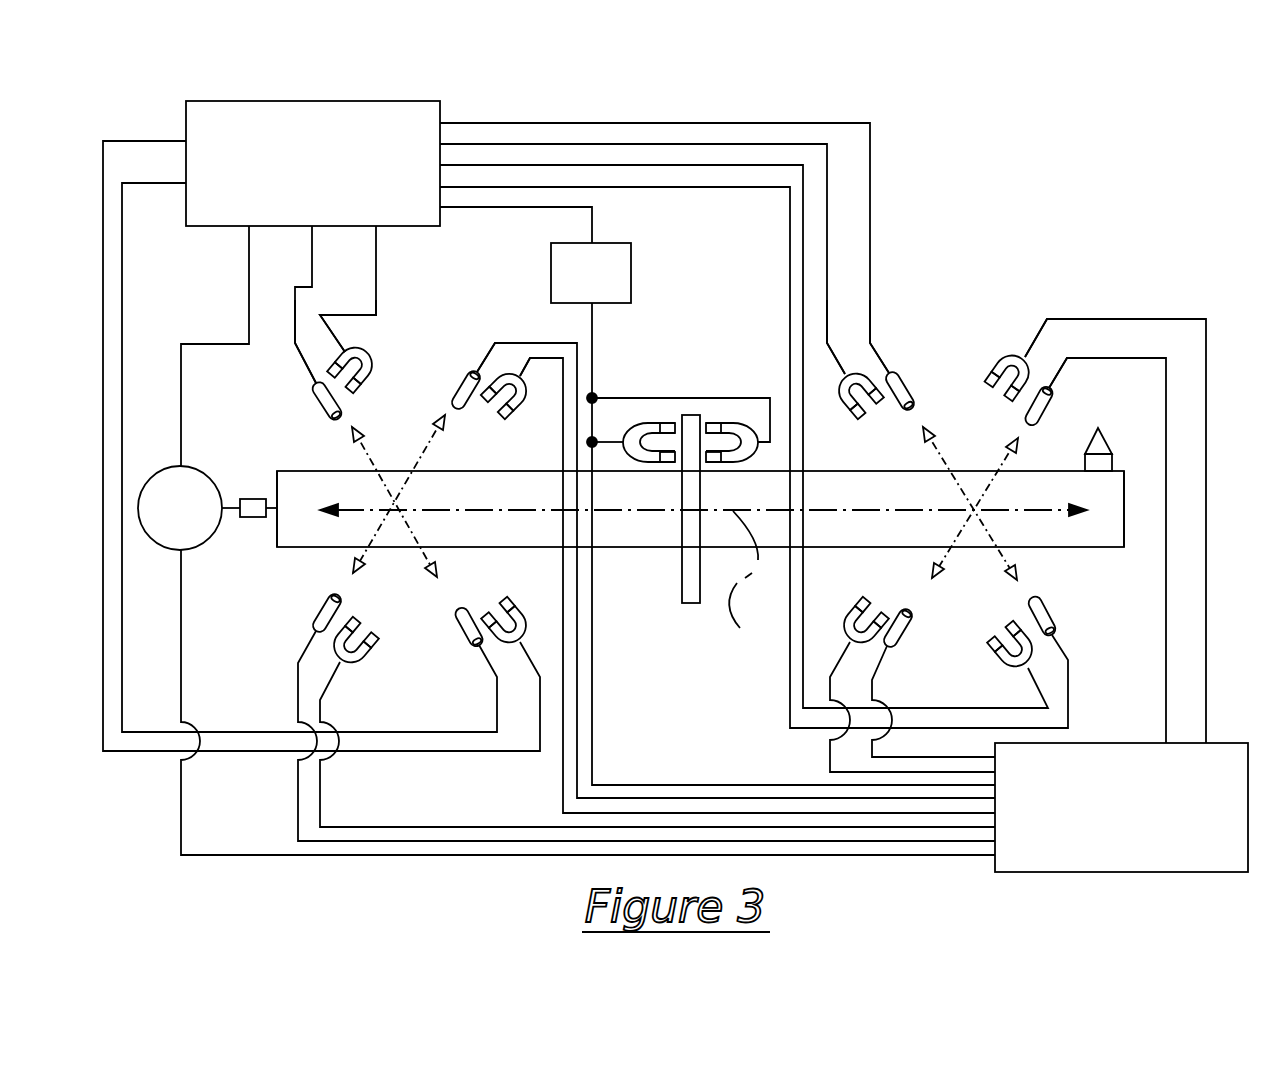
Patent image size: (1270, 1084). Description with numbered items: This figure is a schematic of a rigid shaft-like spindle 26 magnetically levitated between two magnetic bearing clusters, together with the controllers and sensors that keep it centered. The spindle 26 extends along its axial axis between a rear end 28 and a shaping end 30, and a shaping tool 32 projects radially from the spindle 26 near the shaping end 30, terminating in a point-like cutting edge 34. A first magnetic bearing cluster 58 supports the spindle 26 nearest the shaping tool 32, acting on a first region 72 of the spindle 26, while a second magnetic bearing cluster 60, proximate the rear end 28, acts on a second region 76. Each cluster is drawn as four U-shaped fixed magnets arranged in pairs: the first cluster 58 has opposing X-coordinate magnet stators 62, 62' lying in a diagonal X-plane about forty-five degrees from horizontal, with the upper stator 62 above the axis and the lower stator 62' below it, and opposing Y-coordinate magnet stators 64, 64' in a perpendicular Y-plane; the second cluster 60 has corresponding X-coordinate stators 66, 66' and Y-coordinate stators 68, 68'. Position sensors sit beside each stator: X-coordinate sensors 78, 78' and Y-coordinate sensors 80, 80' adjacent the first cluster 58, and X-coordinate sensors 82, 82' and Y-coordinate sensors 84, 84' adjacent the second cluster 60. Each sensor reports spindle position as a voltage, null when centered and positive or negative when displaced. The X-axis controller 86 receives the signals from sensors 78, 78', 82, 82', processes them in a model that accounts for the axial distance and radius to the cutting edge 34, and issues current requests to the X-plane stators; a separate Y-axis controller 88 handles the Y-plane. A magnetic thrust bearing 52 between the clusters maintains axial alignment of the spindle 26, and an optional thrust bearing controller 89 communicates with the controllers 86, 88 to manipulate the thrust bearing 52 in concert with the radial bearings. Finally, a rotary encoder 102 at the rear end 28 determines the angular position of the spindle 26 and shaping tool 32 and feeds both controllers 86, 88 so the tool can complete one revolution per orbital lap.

The spindle 26 is at (1082, 560).
The rear end 28 is at (277, 485).
The shaping end 30 is at (1124, 530).
The shaping tool 32 is at (1107, 440).
The cutting edge 34 is at (1106, 440).
The magnetic thrust bearing 52 is at (718, 385).
The first magnetic bearing cluster 58 is at (956, 298).
The second magnetic bearing cluster 60 is at (440, 312).
The upper X-coordinate magnet stator 62 is at (662, 304).
The lower X-coordinate magnet stator 62' is at (744, 436).
The Y-coordinate magnet stator 64 is at (1093, 519).
The Y-coordinate magnet stator 64' is at (905, 666).
The X-coordinate magnet stator 66 is at (369, 309).
The X-coordinate magnet stator 66' is at (331, 446).
The Y-coordinate magnet stator 68 is at (738, 585).
The Y-coordinate magnet stator 68' is at (657, 722).
The first region 72 is at (970, 549).
The second region 76 is at (378, 549).
The X-coordinate position sensor 78 is at (683, 267).
The X-coordinate position sensor 78' is at (782, 457).
The Y-coordinate position sensor 80 is at (1094, 550).
The Y-coordinate position sensor 80' is at (933, 682).
The X-coordinate position sensor 82 is at (301, 324).
The X-coordinate position sensor 82' is at (309, 457).
The Y-coordinate position sensor 84 is at (719, 560).
The Y-coordinate position sensor 84' is at (614, 708).
The X-axis controller 86 is at (316, 101).
The Y-axis controller 88 is at (1123, 872).
The thrust bearing controller 89 is at (717, 496).
The rotary encoder 102 is at (160, 470).